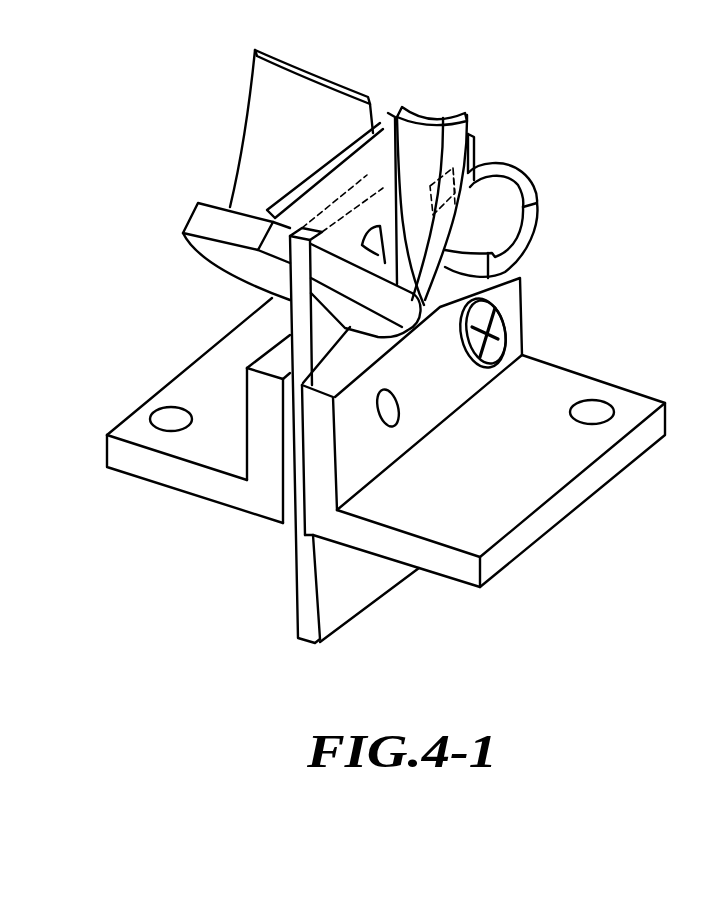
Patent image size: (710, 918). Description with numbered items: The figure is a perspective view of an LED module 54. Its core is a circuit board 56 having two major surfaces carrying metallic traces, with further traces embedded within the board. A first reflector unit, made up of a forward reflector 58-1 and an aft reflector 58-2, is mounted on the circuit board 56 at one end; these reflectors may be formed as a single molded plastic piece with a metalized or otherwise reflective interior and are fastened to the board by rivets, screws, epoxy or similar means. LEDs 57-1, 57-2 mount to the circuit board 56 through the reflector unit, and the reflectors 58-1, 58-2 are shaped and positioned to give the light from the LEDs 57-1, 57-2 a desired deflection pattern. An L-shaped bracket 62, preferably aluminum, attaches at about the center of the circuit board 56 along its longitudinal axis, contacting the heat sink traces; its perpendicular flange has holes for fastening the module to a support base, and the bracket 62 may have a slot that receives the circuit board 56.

The LED module 54 is at (612, 126).
The circuit board 56 is at (303, 577).
The LED 57-1 is at (385, 265).
The LED 57-2 is at (460, 196).
The forward reflector 58-1 is at (423, 118).
The aft reflector 58-2 is at (522, 193).
The L-shaped bracket 62 is at (447, 565).